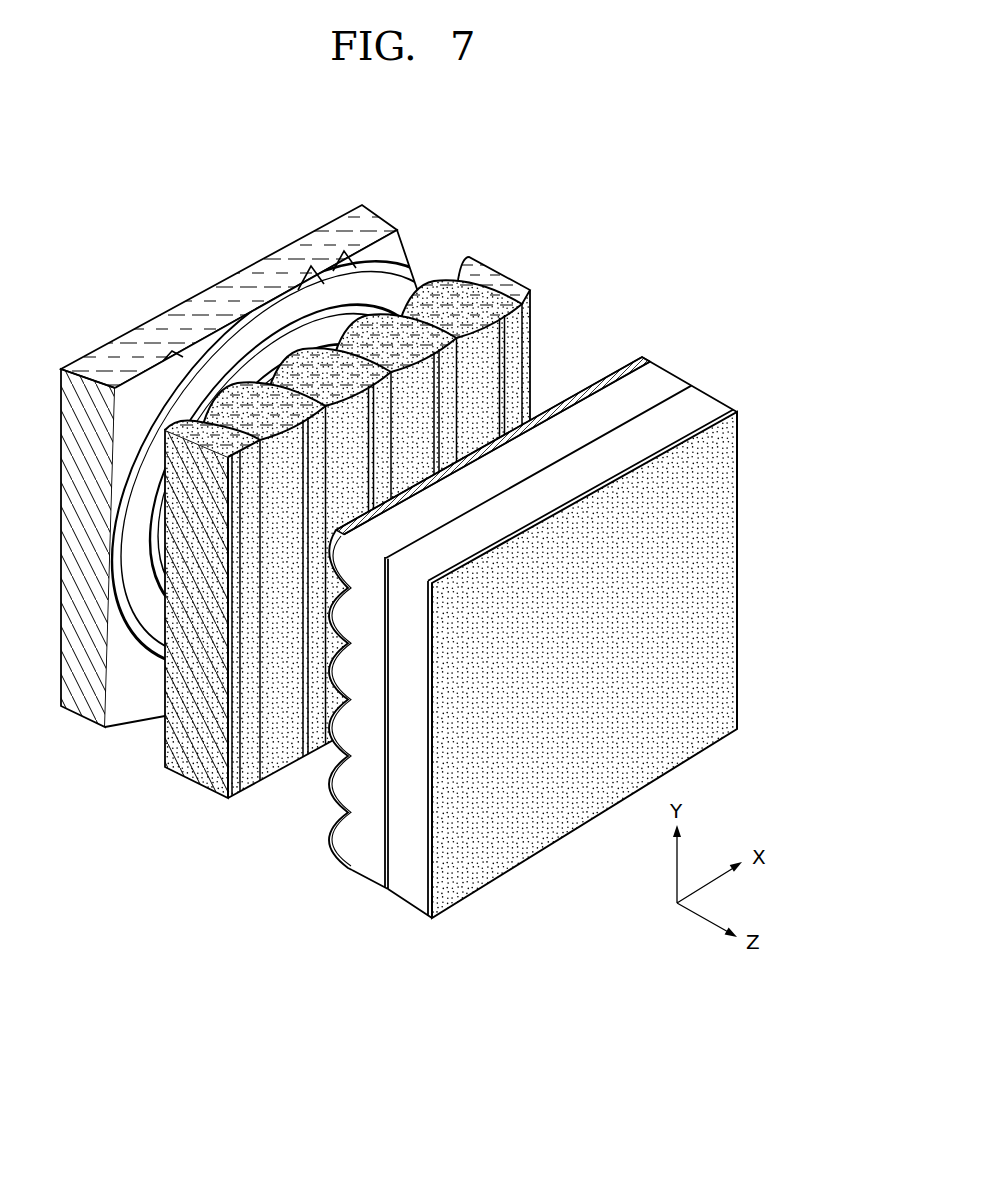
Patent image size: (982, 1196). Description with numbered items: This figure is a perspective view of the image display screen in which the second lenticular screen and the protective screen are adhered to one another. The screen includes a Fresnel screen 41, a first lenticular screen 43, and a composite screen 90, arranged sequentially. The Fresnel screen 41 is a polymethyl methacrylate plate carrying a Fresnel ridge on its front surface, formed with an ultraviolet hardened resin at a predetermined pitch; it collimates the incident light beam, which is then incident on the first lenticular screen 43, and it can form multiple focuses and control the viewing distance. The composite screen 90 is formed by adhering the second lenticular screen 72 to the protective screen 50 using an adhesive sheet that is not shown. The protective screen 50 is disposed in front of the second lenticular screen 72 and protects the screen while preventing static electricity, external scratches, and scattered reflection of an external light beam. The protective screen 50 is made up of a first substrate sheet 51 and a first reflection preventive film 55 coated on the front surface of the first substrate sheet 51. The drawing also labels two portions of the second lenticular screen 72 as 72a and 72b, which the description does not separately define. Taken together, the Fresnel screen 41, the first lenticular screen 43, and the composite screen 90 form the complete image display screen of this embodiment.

The Fresnel screen 41 is at (378, 216).
The first lenticular screen 43 is at (500, 278).
The protective screen 50 is at (487, 682).
The first substrate sheet 51 is at (410, 900).
The first reflection preventive film 55 is at (390, 965).
The second lenticular screen 72 is at (464, 642).
The lens sheet base 72a is at (363, 862).
The lens sheet lens portion 72b is at (330, 845).
The composite screen 90 is at (494, 649).